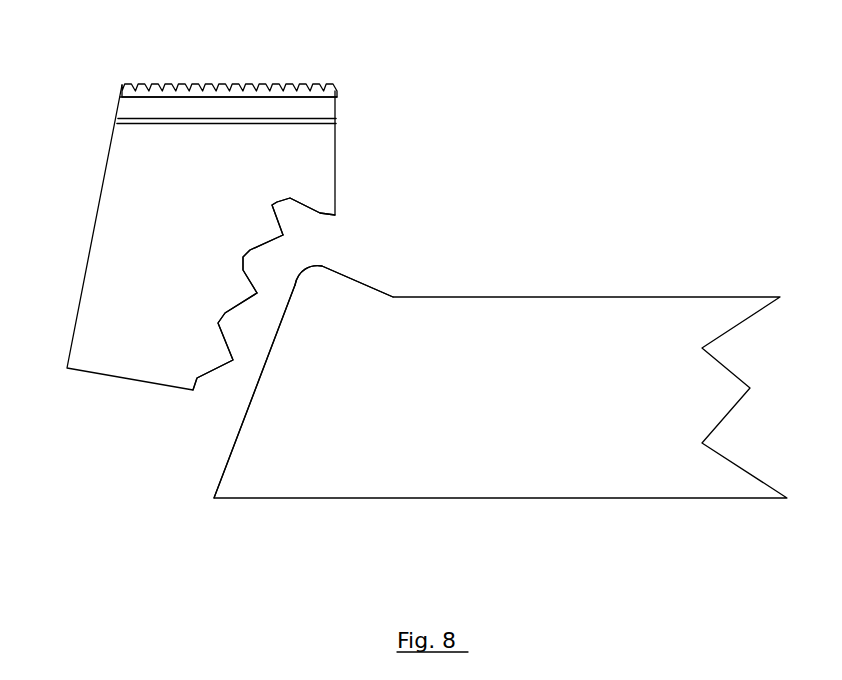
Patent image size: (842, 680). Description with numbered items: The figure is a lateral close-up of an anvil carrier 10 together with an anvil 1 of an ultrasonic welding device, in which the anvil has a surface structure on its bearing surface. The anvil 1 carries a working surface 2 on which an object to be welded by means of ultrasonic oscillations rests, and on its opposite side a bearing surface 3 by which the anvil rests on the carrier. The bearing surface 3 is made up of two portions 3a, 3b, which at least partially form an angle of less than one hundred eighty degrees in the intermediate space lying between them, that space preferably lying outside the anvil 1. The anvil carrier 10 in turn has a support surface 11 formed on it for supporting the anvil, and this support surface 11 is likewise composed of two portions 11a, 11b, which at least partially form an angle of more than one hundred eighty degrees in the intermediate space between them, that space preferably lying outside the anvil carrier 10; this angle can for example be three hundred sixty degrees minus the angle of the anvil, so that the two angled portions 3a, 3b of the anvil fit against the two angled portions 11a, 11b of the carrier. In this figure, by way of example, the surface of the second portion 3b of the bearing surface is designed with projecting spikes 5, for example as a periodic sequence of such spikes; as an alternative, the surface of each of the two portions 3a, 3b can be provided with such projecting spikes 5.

The anvil 1 is at (100, 360).
The working surface 2 is at (250, 87).
The bearing surface 3 is at (285, 335).
The first portion of the bearing surface 3a is at (312, 211).
The second portion of the bearing surface 3b is at (198, 385).
The projecting spikes 5 is at (273, 240).
The anvil carrier 10 is at (640, 488).
The support surface 11 is at (316, 382).
The first portion of the support surface 11a is at (360, 283).
The second portion of the support surface 11b is at (255, 397).